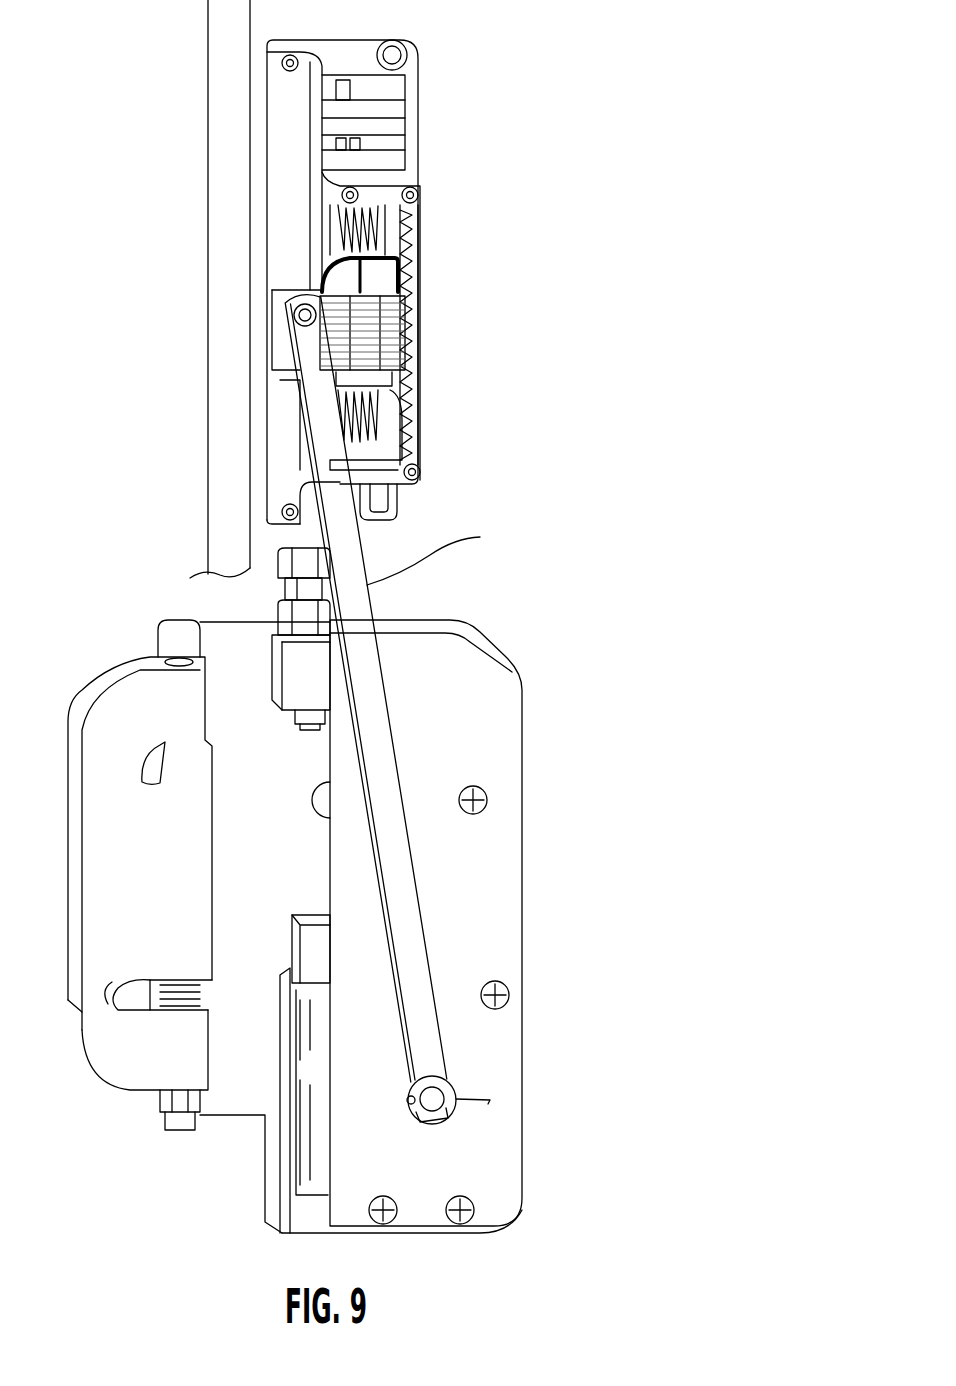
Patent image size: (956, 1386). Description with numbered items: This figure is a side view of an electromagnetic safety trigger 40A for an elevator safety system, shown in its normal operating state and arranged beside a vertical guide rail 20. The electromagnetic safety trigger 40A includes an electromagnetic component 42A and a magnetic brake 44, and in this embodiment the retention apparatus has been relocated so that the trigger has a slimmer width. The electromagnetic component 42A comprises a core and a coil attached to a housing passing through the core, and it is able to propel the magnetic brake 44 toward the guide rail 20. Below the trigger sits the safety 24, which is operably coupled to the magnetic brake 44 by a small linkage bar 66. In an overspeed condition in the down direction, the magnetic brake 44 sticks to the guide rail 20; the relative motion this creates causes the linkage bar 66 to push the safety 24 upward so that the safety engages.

The guide rail 20 is at (220, 48).
The electromagnetic safety trigger 40A is at (521, 102).
The electromagnetic component 42A is at (440, 325).
The magnetic brake 44 is at (290, 352).
The linkage bar 66 is at (410, 570).
The safety 24 is at (242, 1184).